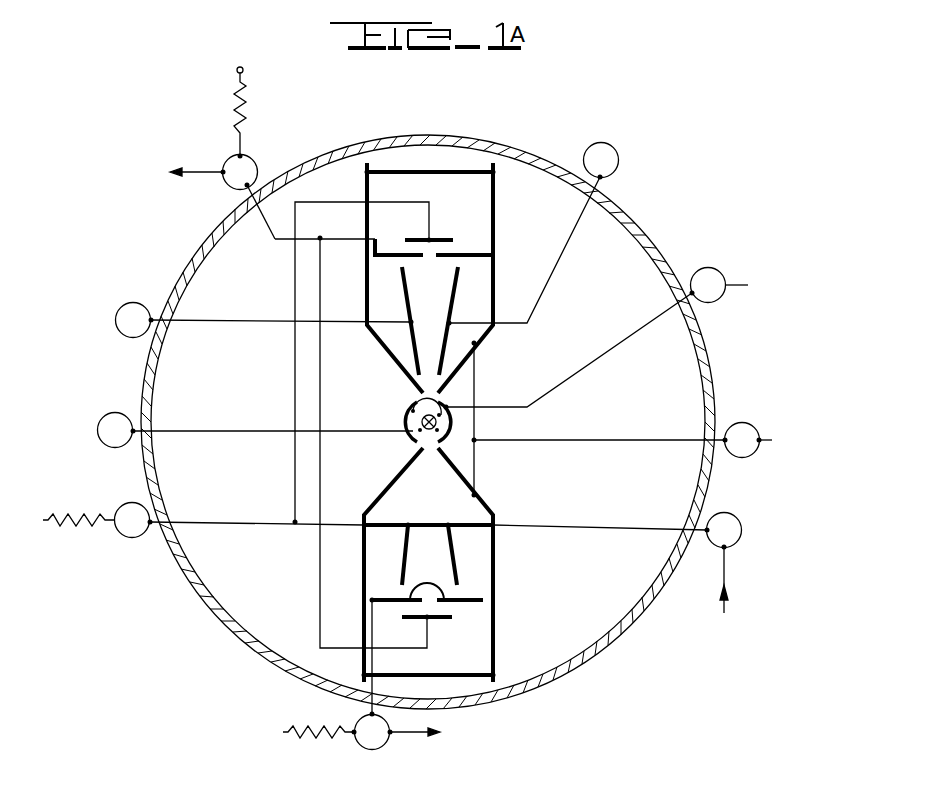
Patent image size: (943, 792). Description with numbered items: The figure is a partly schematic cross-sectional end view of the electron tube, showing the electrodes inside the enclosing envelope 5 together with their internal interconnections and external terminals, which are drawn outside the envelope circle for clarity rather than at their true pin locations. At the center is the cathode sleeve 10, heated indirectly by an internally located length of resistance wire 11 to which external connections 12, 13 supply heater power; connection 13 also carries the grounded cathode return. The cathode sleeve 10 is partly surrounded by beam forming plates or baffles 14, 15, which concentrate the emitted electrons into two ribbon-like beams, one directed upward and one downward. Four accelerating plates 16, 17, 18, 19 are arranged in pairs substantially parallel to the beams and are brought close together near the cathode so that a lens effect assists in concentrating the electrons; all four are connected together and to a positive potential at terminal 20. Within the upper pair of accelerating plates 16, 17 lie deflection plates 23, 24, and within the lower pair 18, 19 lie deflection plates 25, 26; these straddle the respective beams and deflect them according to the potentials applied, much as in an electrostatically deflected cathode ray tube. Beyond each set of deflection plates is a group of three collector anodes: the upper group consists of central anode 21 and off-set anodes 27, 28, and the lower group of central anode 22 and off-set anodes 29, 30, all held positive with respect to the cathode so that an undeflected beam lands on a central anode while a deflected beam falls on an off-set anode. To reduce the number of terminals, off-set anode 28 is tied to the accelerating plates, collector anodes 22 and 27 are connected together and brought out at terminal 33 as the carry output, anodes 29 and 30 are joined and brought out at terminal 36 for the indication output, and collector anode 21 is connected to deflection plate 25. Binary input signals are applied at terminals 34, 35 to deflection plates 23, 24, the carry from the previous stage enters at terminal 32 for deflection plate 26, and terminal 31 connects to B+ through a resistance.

The glass envelope 5 is at (206, 600).
The cathode sleeve 10 is at (412, 403).
The resistance wire 11 is at (413, 426).
The external connection 12 is at (243, 430).
The external connection 13 is at (607, 339).
The beam forming plate 14 is at (412, 442).
The beam forming plate 15 is at (448, 416).
The accelerating plate 16 is at (377, 341).
The accelerating plate 17 is at (483, 341).
The accelerating plate 18 is at (380, 500).
The accelerating plate 19 is at (482, 502).
The terminal 20 is at (636, 440).
The central collector anode 21 is at (437, 240).
The central collector anode 22 is at (438, 621).
The deflection plate 23 is at (404, 290).
The deflection plate 24 is at (456, 290).
The deflection plate 25 is at (403, 557).
The deflection plate 26 is at (453, 557).
The off-set collector anode 27 is at (395, 251).
The off-set collector anode 28 is at (463, 255).
The off-set collector anode 29 is at (393, 603).
The off-set collector anode 30 is at (463, 603).
The terminal 31 is at (200, 513).
The terminal 32 is at (643, 594).
The terminal 33 is at (194, 141).
The terminal 34 is at (265, 320).
The terminal 35 is at (533, 234).
The terminal 36 is at (395, 732).